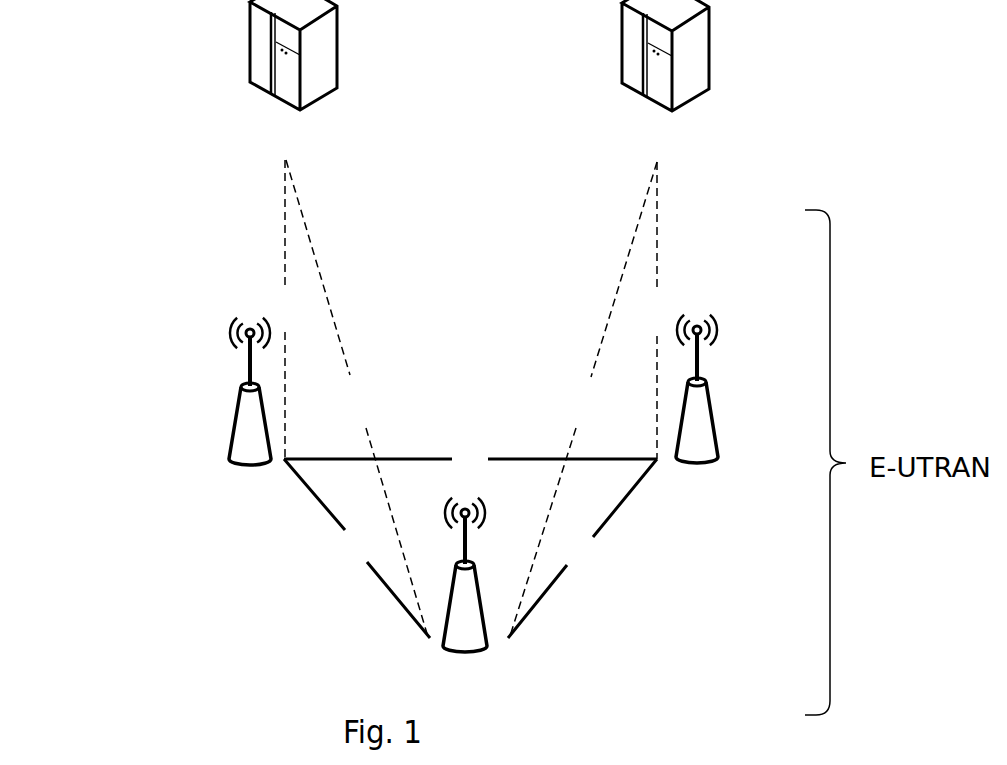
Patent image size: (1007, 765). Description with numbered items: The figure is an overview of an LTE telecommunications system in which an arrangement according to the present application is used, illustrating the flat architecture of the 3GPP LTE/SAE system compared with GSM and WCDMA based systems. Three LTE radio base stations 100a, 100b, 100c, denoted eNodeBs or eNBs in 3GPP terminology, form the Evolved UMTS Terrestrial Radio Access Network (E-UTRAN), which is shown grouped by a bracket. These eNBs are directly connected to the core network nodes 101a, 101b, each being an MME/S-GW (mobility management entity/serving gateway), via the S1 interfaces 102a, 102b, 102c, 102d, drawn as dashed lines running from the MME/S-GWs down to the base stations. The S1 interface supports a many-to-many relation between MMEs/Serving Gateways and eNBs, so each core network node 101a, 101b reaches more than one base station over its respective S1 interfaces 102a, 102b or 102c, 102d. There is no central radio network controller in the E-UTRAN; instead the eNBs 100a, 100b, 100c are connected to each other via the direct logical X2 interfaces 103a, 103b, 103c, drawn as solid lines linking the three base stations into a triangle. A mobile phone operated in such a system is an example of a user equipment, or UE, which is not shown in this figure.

The LTE radio base station 100a is at (248, 413).
The LTE radio base station 100b is at (483, 650).
The LTE radio base station 100c is at (698, 402).
The core network node 101a is at (262, 78).
The core network node 101b is at (690, 78).
The S1 interface 102a is at (280, 257).
The S1 interface 102b is at (307, 222).
The S1 interface 102c is at (628, 247).
The S1 interface 102d is at (657, 247).
The X2 interface 103a is at (313, 508).
The X2 interface 103b is at (415, 457).
The X2 interface 103c is at (608, 523).